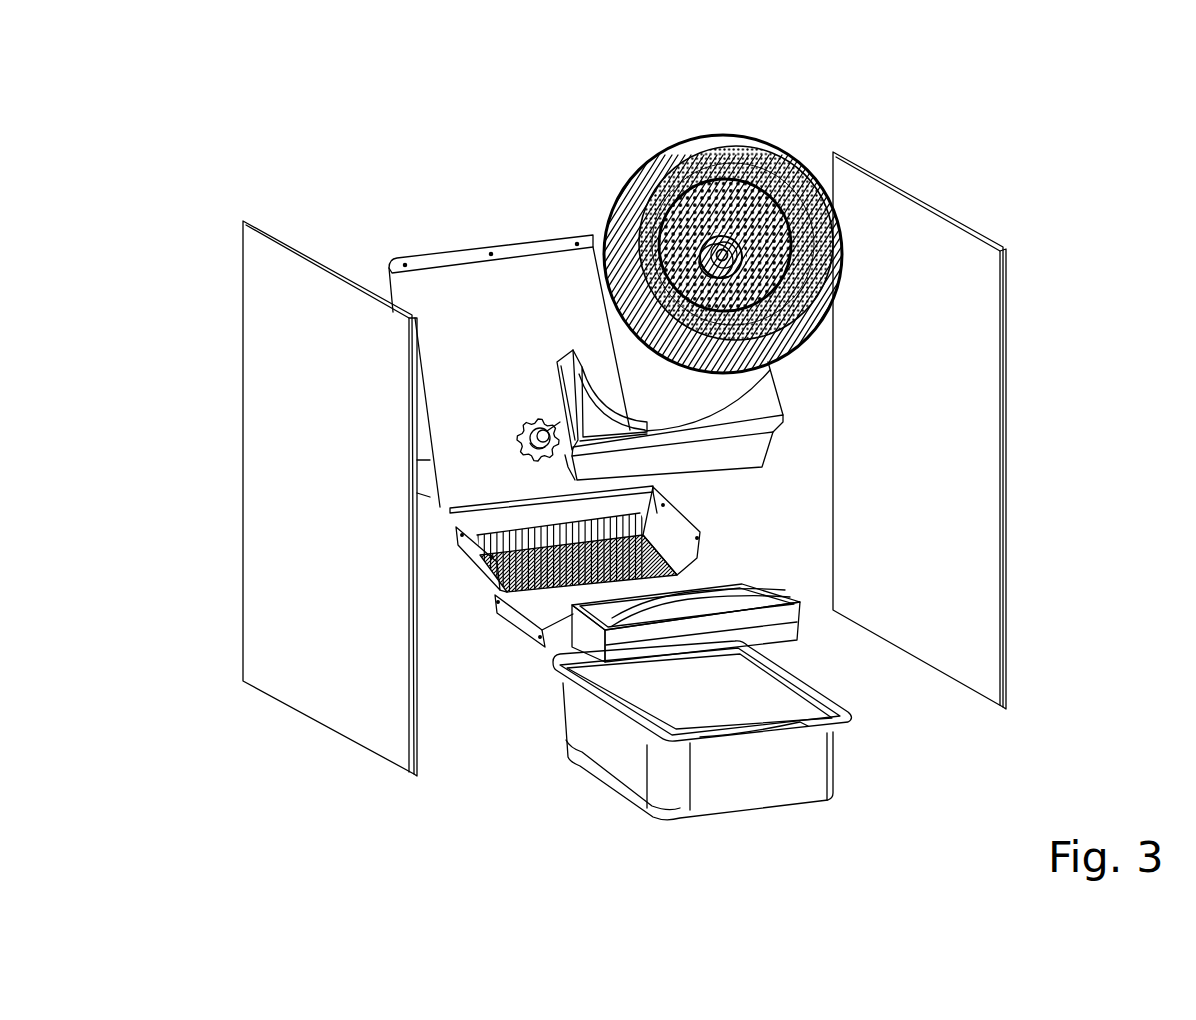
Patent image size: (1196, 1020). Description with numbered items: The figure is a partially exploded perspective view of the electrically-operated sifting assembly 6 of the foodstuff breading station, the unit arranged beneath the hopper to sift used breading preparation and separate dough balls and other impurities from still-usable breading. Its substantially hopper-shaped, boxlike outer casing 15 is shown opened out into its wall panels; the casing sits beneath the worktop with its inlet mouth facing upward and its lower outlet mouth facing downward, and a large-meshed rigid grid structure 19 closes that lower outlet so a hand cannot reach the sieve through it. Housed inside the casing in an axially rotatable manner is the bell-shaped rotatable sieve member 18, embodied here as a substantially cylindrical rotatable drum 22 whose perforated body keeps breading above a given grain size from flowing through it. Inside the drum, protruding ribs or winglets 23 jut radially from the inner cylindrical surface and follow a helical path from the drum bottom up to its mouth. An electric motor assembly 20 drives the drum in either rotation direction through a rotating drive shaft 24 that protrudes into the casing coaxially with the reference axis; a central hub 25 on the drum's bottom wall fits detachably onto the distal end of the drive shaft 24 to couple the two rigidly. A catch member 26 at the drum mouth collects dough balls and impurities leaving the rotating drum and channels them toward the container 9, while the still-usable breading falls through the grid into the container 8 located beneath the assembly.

The electrically-operated sifting assembly 6 is at (337, 228).
The container 8 is at (617, 772).
The container 9 is at (703, 635).
The outer casing 15 is at (285, 419).
The rotatable sieve member 18 is at (758, 217).
The rigid grid structure 19 is at (527, 590).
The electric motor assembly 20 is at (513, 452).
The rotatable drum 22 is at (607, 267).
The protruding ribs or winglets 23 is at (767, 170).
The rotating drive shaft 24 is at (470, 434).
The central hub 25 is at (695, 142).
The catch member 26 is at (747, 408).